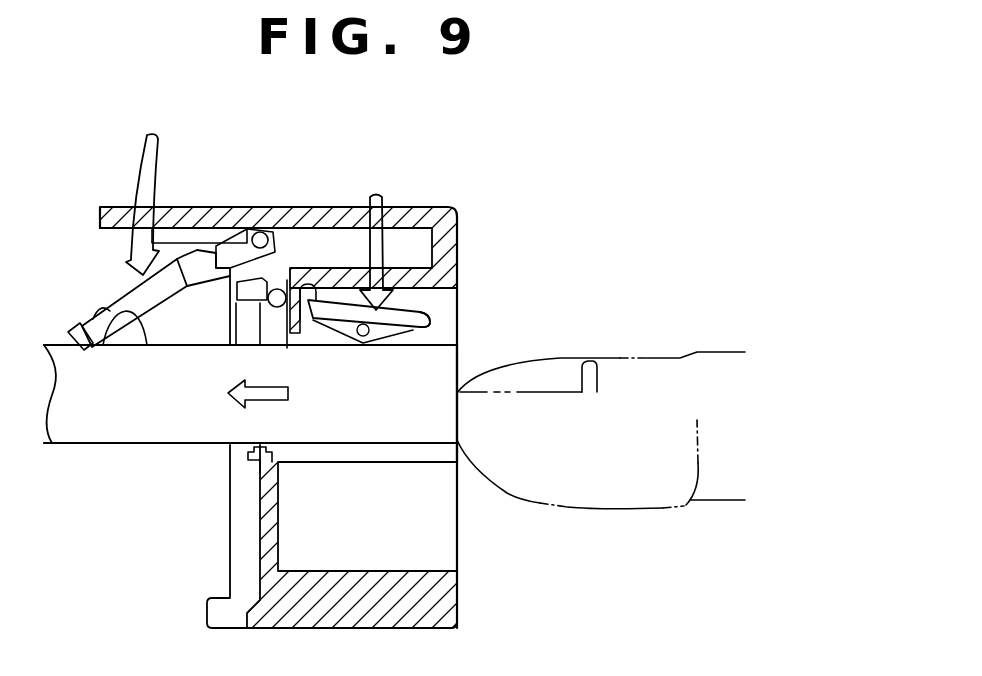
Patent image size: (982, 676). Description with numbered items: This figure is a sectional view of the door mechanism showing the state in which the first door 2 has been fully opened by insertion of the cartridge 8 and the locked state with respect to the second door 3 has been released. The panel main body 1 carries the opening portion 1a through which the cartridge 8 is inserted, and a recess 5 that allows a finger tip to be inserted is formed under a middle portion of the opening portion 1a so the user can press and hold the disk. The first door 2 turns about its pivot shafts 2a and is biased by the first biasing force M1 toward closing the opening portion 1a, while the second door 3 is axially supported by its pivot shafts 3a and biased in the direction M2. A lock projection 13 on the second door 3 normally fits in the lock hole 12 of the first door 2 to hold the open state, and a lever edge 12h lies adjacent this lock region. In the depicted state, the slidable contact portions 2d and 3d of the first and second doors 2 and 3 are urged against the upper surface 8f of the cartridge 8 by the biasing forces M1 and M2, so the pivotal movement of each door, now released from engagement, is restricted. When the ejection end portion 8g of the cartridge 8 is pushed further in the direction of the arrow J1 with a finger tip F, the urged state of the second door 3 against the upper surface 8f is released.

The panel main body 1 is at (436, 195).
The opening portion 1a is at (448, 453).
The first door 2 is at (126, 290).
The pivot shaft 2a is at (272, 256).
The slidable contact portion 2d is at (78, 322).
The second door 3 is at (424, 305).
The pivot shaft 3a is at (284, 340).
The slidable contact portion 3d is at (428, 325).
The recess 5 is at (422, 550).
The cartridge 8 is at (150, 407).
The upper surface 8f is at (110, 307).
The ejection end portion 8g is at (457, 395).
The lock hole 12 is at (200, 260).
The lever edge 12h is at (230, 263).
The lock projection 13 is at (228, 311).
The first biasing force M1 is at (133, 163).
The biasing force M2 is at (370, 197).
The insertion direction J1 is at (265, 402).
The finger tip F is at (645, 353).